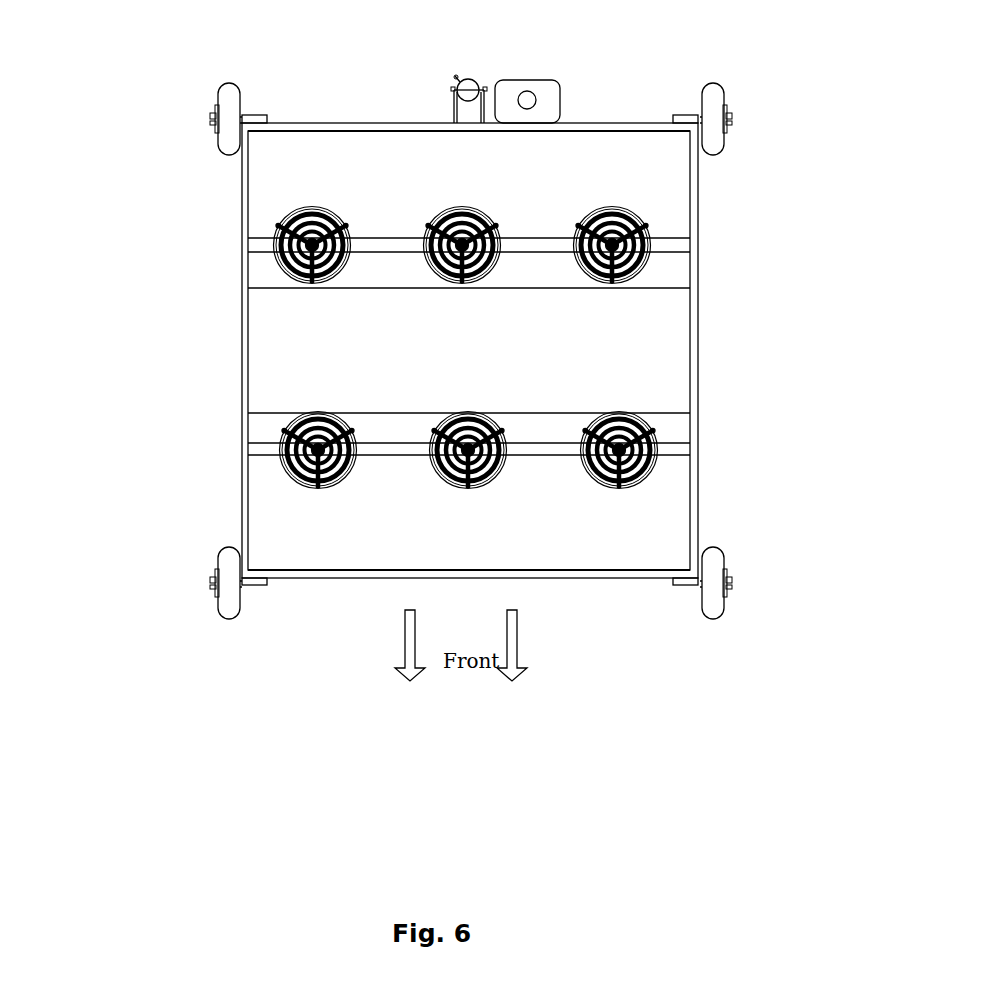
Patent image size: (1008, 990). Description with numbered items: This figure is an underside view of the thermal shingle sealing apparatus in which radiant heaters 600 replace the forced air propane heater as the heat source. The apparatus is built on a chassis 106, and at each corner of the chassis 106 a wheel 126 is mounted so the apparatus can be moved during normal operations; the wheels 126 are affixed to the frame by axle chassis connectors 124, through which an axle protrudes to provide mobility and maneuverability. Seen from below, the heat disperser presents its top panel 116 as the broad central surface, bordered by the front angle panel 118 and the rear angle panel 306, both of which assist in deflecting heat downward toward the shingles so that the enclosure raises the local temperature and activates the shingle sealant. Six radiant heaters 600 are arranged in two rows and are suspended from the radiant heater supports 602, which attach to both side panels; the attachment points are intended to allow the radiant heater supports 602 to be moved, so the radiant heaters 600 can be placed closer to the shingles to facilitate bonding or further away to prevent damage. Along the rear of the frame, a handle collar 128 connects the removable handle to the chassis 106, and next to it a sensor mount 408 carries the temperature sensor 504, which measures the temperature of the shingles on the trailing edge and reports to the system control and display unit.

The chassis 106 is at (245, 190).
The top panel 116 is at (467, 350).
The front angle panel 118 is at (562, 520).
The axle chassis connector 124 is at (682, 585).
The wheel 126 is at (228, 580).
The handle collar 128 is at (478, 80).
The rear angle panel 306 is at (520, 175).
The sensor mount 408 is at (552, 108).
The temperature sensor 504 is at (528, 100).
The radiant heater 600 is at (350, 348).
The radiant heater support 602 is at (690, 450).